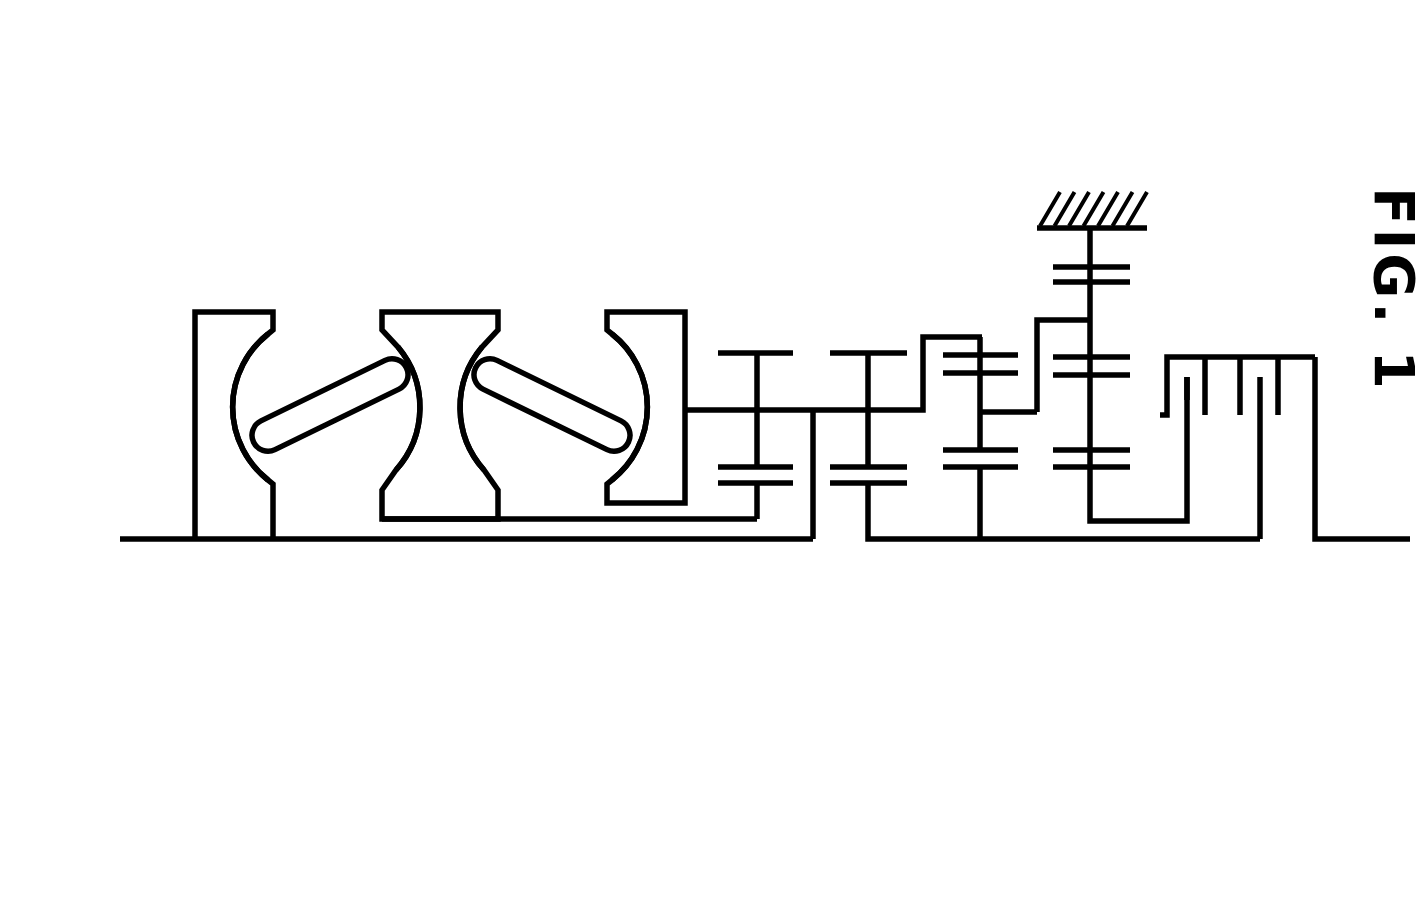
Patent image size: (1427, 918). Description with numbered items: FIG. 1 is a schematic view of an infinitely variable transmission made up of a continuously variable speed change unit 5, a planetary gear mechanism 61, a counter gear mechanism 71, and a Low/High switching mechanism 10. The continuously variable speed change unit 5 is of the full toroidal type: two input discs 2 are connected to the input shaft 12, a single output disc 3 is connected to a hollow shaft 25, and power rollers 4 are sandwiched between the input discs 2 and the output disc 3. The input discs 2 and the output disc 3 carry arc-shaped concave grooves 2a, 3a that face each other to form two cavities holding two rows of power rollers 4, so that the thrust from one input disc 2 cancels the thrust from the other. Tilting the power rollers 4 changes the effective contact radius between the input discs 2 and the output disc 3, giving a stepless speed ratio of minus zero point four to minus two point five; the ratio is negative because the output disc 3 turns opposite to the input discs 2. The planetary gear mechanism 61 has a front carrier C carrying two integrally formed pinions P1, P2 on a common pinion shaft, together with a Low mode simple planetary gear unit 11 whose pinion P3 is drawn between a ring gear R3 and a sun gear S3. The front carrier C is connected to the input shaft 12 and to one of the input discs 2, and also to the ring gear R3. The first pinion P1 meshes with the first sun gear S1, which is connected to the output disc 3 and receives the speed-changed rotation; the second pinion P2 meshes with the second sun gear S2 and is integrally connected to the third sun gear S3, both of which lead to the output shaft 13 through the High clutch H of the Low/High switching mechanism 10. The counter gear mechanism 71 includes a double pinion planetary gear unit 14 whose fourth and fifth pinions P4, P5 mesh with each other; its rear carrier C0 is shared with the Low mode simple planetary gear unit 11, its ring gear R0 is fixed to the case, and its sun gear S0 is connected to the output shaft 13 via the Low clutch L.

The input disc 2 is at (227, 325).
The arc-shaped concave groove 2a is at (273, 345).
The output disc 3 is at (438, 322).
The arc-shaped concave groove 3a is at (407, 436).
The power roller 4 is at (360, 377).
The continuously variable speed change unit 5 is at (510, 250).
The Low/High switching mechanism 10 is at (1236, 261).
The Low mode simple planetary gear unit 11 is at (961, 278).
The input shaft 12 is at (165, 533).
The output shaft 13 is at (1358, 538).
The double pinion planetary gear unit 14 is at (1166, 286).
The hollow shaft 25 is at (562, 522).
The planetary gear mechanism 61 is at (897, 250).
The counter gear mechanism 71 is at (1084, 178).
The front carrier C is at (833, 438).
The rear carrier C0 is at (1055, 351).
The first pinion P1 is at (755, 387).
The second pinion P2 is at (868, 387).
The pinion gear P3 is at (977, 389).
The fourth pinion P4 is at (1097, 434).
The fifth pinion P5 is at (1097, 302).
The first sun gear S1 is at (748, 493).
The second sun gear S2 is at (1045, 503).
The third sun gear S3 is at (987, 480).
The fourth sun gear S0 is at (1120, 449).
The second ring gear R0 is at (1108, 292).
The ring gear R3 is at (980, 331).
The Low clutch L is at (1190, 364).
The High clutch H is at (1259, 425).